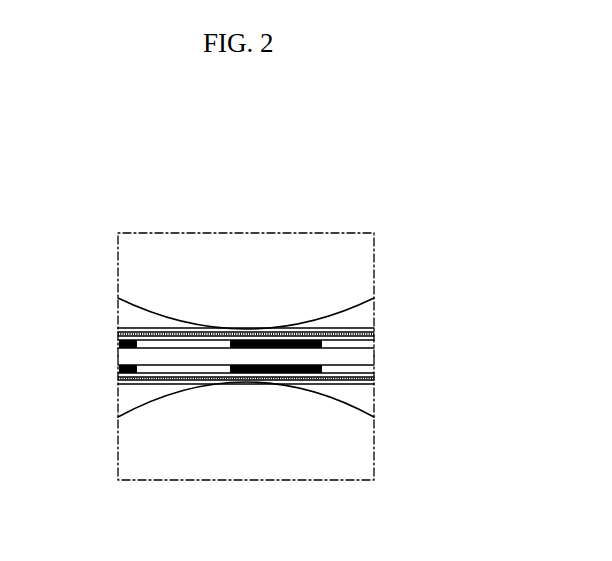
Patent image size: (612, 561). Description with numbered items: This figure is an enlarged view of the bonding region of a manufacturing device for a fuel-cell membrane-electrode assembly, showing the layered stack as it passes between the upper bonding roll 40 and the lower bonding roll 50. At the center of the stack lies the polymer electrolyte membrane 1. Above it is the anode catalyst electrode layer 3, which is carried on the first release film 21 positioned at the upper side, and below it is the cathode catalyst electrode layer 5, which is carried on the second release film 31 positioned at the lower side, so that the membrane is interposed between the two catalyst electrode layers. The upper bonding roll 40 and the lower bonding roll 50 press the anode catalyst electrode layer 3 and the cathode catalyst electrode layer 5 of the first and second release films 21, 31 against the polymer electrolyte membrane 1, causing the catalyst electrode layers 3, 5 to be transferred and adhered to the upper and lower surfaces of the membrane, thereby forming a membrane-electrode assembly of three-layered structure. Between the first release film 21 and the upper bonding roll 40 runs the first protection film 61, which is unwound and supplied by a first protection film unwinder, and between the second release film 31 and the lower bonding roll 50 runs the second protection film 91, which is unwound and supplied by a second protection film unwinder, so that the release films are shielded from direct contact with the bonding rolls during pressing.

The polymer electrolyte membrane 1 is at (368, 357).
The anode catalyst electrode layer 3 is at (365, 334).
The cathode catalyst electrode layer 5 is at (276, 378).
The first release film 21 is at (148, 337).
The second release film 31 is at (362, 381).
The upper bonding roll 40 is at (242, 252).
The lower bonding roll 50 is at (247, 468).
The first protection film 61 is at (125, 335).
The second protection film 91 is at (125, 382).